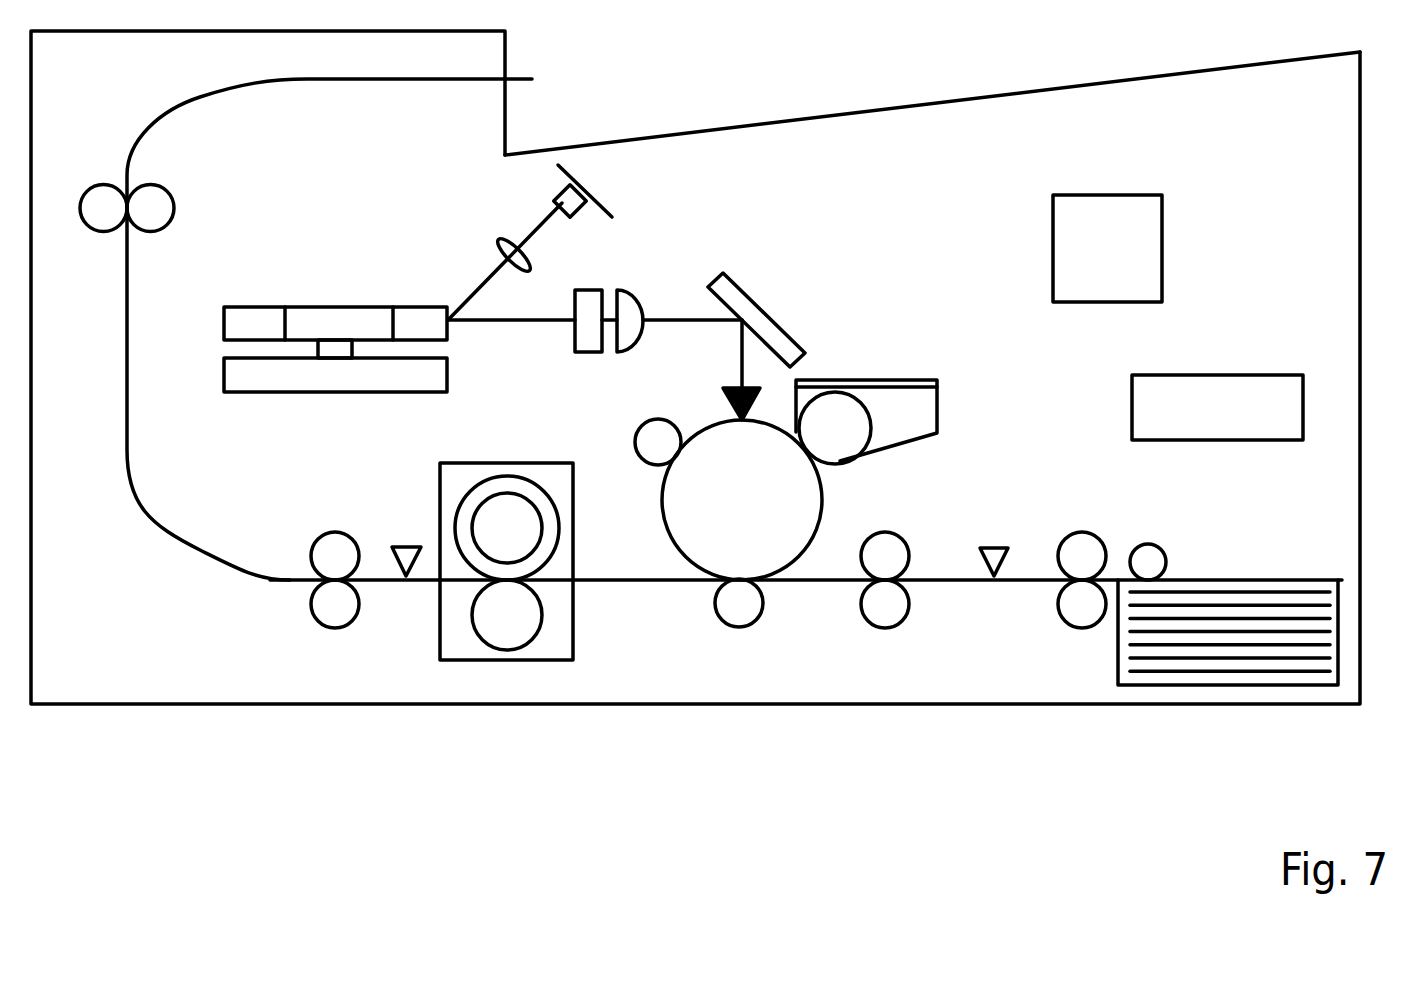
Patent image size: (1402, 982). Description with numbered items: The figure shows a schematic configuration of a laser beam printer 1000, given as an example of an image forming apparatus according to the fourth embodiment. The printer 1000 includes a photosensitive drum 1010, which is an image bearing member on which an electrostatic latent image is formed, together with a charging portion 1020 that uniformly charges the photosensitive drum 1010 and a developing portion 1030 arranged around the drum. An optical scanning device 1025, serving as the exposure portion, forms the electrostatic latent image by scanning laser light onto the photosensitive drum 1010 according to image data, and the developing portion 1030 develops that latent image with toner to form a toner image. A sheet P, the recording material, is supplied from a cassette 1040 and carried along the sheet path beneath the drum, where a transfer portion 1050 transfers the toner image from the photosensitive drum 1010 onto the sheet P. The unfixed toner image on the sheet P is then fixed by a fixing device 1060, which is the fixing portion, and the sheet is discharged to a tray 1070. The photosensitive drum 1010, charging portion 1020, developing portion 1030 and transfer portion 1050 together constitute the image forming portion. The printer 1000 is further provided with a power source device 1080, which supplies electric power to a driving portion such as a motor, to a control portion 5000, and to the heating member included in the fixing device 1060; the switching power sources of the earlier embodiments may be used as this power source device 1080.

The laser beam printer 1000 is at (698, 704).
The photosensitive drum 1010 is at (660, 502).
The charging portion 1020 is at (636, 428).
The optical scanning device 1025 is at (250, 307).
The developing portion 1030 is at (939, 392).
The cassette 1040 is at (1313, 560).
The transfer portion 1050 is at (727, 622).
The fixing device 1060 is at (440, 638).
The tray 1070 is at (720, 128).
The power source device 1080 is at (1207, 375).
The control portion 5000 is at (1162, 260).
The sheet P is at (1182, 672).